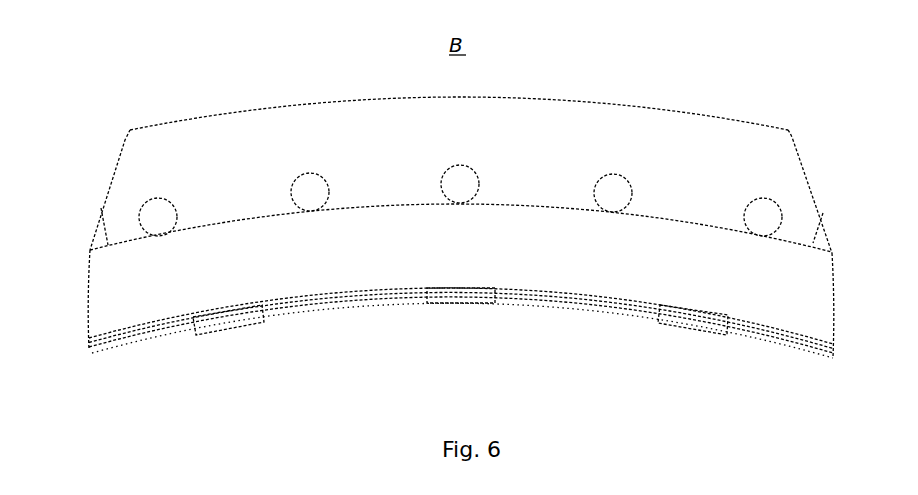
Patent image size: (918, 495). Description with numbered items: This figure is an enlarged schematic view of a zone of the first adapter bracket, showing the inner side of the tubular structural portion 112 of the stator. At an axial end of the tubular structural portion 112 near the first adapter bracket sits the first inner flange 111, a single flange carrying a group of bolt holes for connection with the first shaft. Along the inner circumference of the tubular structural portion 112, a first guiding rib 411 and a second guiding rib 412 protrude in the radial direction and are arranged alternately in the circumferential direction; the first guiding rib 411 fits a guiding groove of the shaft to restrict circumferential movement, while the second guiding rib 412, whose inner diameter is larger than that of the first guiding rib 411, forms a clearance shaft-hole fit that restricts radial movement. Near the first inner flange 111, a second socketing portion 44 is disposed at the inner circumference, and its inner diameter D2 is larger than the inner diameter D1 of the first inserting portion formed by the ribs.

The first inner flange 111 is at (668, 147).
The tubular structural portion 112 is at (348, 232).
The second socketing portion 44 is at (783, 332).
The first guiding rib 411 is at (240, 327).
The second guiding rib 412 is at (462, 300).
The inner diameter of the first inserting portion D1 is at (578, 312).
The inner diameter of the second socketing portion D2 is at (333, 307).